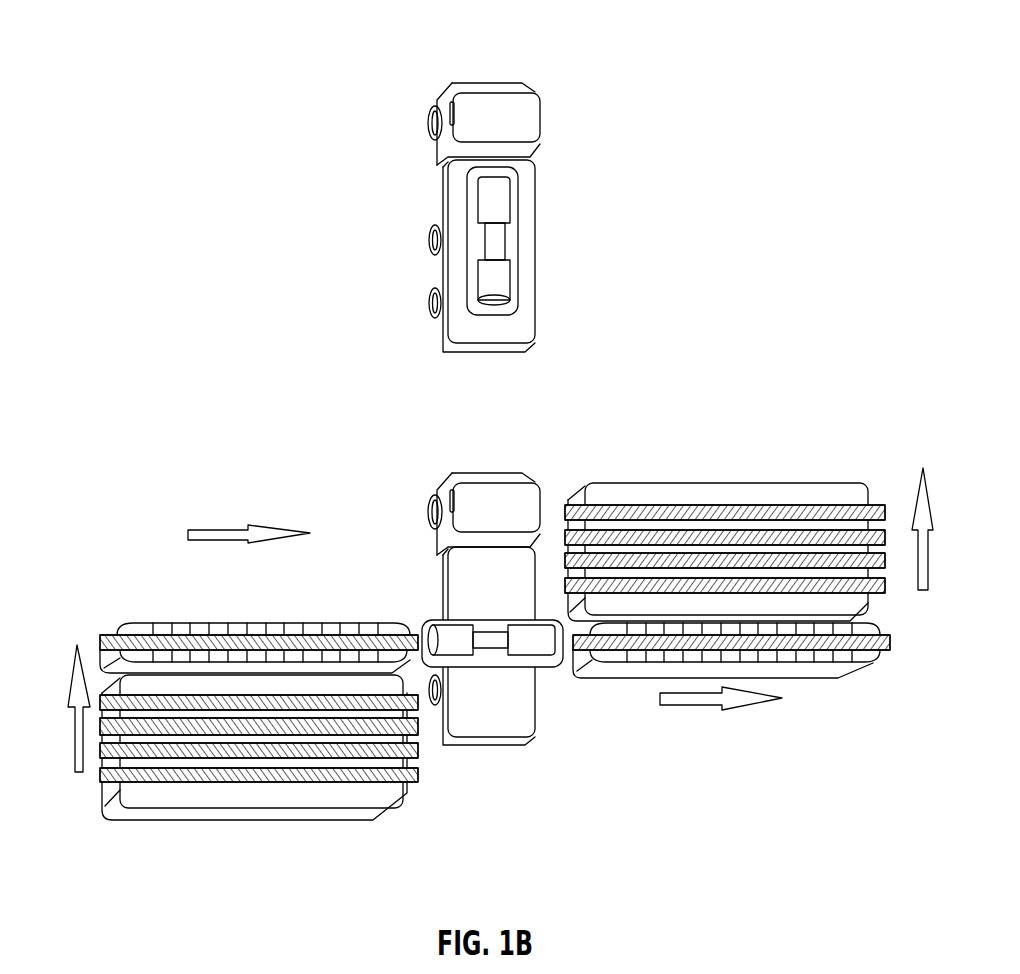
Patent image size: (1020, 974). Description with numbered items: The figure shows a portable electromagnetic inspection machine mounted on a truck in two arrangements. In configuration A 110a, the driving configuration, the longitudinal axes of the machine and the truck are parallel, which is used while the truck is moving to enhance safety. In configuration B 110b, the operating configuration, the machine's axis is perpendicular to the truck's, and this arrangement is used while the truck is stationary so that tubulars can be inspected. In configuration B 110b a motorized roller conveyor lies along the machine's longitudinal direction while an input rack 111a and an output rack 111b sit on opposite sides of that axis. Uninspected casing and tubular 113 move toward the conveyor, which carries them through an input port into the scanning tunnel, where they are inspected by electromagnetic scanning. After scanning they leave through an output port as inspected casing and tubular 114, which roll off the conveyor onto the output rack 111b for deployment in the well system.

The configuration A 110a is at (395, 51).
The configuration B 110b is at (395, 431).
The input rack 111a is at (368, 788).
The output rack 111b is at (632, 498).
The uninspected casing and tubular 113 is at (160, 778).
The inspected casing and tubular 114 is at (810, 515).